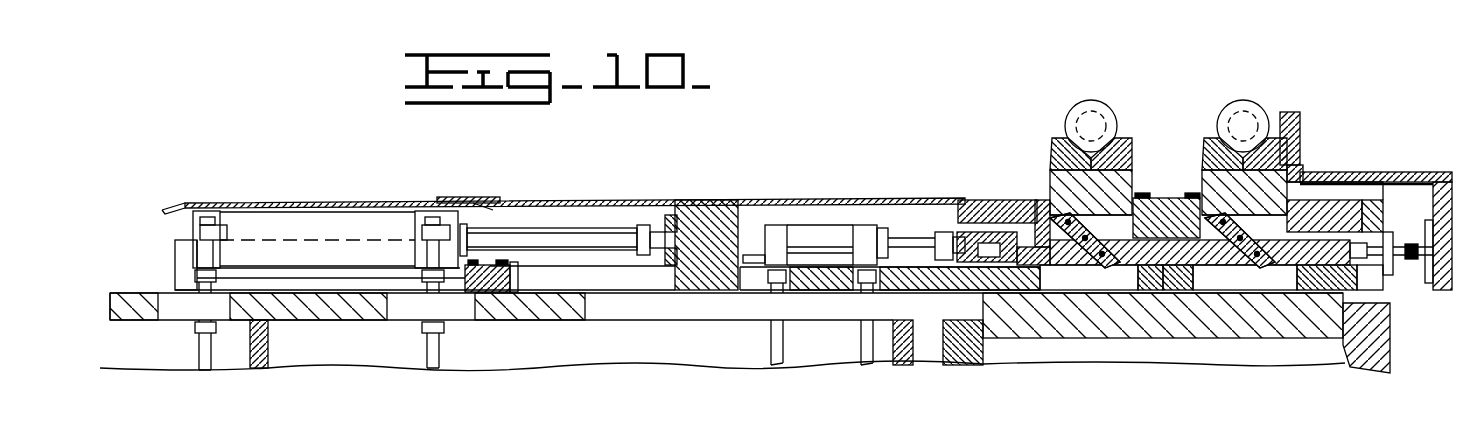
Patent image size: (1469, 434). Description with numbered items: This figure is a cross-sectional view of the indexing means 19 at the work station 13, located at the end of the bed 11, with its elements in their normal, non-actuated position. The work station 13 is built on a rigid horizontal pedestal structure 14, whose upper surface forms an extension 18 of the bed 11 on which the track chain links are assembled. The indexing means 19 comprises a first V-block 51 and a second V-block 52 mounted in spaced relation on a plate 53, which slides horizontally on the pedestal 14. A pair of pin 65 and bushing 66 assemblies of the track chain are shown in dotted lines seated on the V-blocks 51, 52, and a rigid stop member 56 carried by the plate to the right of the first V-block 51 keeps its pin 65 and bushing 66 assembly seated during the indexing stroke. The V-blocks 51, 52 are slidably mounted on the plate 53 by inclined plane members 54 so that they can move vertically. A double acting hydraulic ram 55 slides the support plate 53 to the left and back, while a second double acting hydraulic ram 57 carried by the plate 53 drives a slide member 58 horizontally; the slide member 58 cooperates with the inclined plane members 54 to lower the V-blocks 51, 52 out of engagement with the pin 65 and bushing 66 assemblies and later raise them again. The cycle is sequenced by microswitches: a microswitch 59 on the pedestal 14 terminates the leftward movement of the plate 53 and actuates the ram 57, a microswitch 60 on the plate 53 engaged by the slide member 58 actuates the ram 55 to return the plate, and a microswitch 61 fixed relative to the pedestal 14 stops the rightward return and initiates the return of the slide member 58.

The bed 11 is at (456, 240).
The work station 13 is at (895, 232).
The pedestal structure 14 is at (1178, 332).
The extension of the bed 18 is at (1229, 194).
The indexing means 19 is at (978, 192).
The first V-block 51 is at (1282, 152).
The second V-block 52 is at (1125, 162).
The plate 53 is at (1163, 205).
The inclined plane members 54 is at (1092, 262).
The double acting hydraulic ram 55 is at (320, 222).
The stop member 56 is at (1297, 112).
The second double acting hydraulic ram 57 is at (802, 238).
The slide member 58 is at (1163, 264).
The microswitch 59 is at (490, 293).
The microswitch 60 is at (1375, 260).
The microswitch 61 is at (1417, 258).
The pin 65 is at (1104, 106).
The bushing 66 is at (1065, 122).